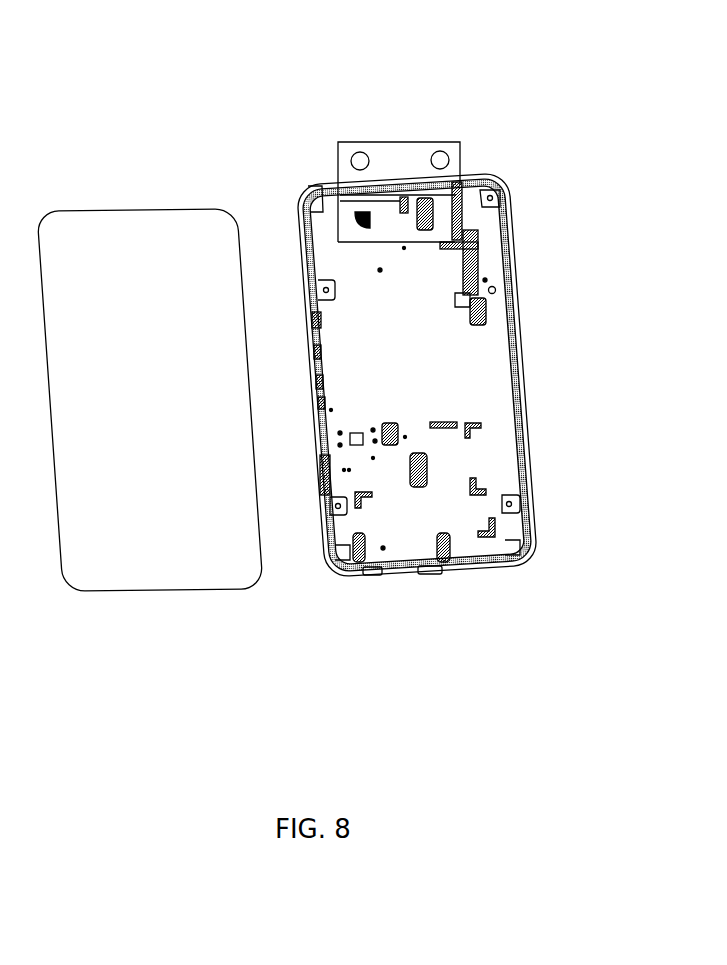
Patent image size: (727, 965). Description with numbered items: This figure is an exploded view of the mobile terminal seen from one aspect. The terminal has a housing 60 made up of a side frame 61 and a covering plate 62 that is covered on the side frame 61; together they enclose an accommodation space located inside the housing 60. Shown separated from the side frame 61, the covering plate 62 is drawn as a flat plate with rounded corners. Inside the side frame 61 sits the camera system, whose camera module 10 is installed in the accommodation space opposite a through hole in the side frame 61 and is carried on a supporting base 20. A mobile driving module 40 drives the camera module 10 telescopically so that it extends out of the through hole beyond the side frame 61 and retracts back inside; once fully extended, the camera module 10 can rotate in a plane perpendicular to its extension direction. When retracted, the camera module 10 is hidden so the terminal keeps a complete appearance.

The camera module 10 is at (455, 162).
The supporting base 20 is at (460, 232).
The mobile driving module 40 is at (480, 272).
The housing 60 is at (300, 74).
The side frame 61 is at (321, 187).
The covering plate 62 is at (167, 232).